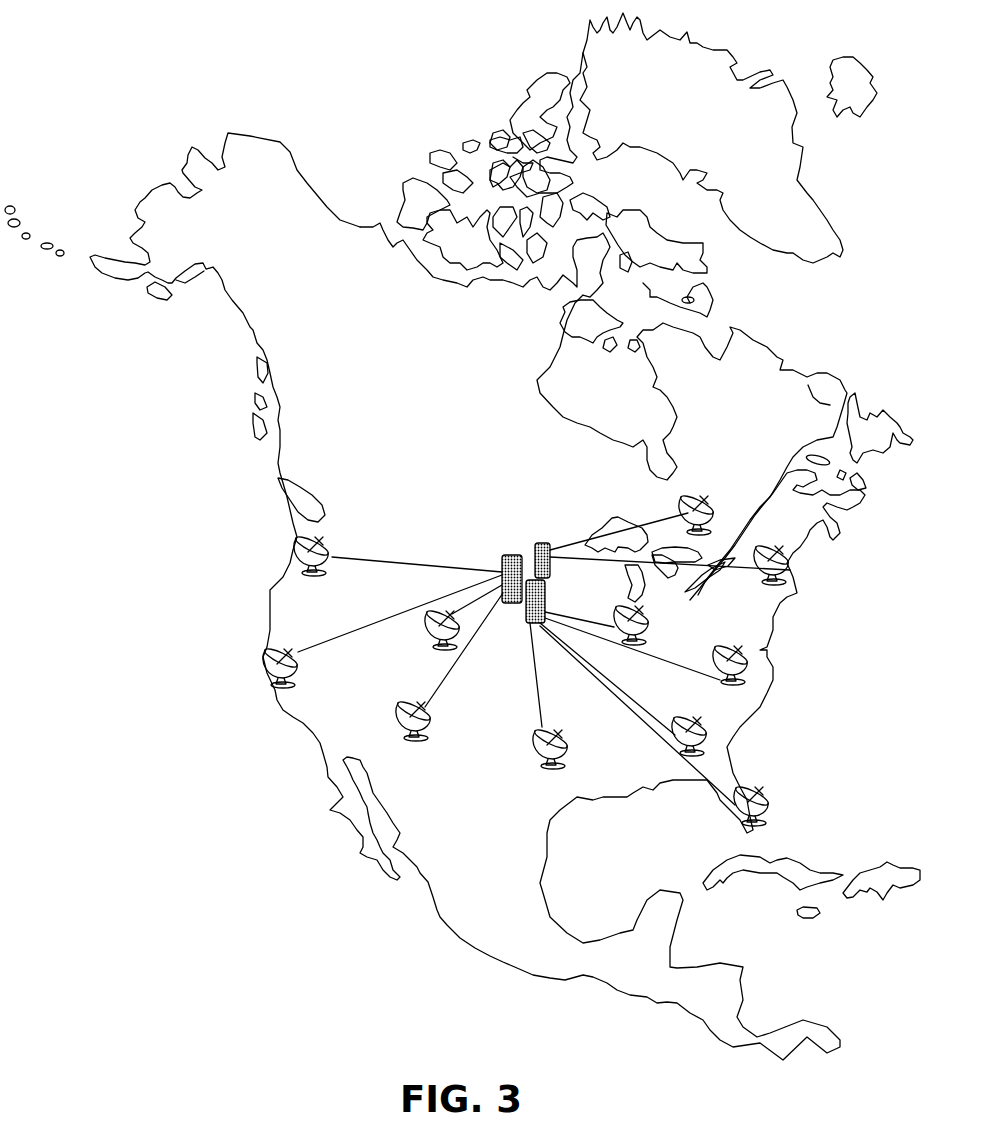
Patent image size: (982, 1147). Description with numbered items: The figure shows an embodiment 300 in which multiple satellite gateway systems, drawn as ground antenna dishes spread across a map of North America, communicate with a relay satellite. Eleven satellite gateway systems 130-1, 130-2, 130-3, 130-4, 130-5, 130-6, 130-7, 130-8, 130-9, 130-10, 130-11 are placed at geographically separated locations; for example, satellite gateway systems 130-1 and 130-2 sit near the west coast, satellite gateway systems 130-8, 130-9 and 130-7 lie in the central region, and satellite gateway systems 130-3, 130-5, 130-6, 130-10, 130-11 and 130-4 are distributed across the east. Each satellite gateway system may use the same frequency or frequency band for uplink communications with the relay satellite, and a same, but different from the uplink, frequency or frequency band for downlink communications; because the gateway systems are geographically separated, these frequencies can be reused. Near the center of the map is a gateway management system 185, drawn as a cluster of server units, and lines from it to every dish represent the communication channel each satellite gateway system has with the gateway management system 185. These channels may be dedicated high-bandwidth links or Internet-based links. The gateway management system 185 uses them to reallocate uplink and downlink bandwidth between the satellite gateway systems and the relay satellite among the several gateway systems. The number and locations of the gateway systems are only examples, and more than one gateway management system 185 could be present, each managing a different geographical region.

The embodiment of multiple satellite gateway systems 300 is at (98, 77).
The gateway management system 185 is at (511, 553).
The satellite gateway system 130-1 is at (312, 531).
The satellite gateway system 130-2 is at (283, 649).
The satellite gateway system 130-3 is at (704, 489).
The satellite gateway system 130-4 is at (768, 798).
The satellite gateway system 130-5 is at (684, 637).
The satellite gateway system 130-6 is at (790, 571).
The satellite gateway system 130-7 is at (537, 758).
The satellite gateway system 130-8 is at (432, 727).
The satellite gateway system 130-9 is at (433, 644).
The satellite gateway system 130-10 is at (757, 672).
The satellite gateway system 130-11 is at (722, 743).